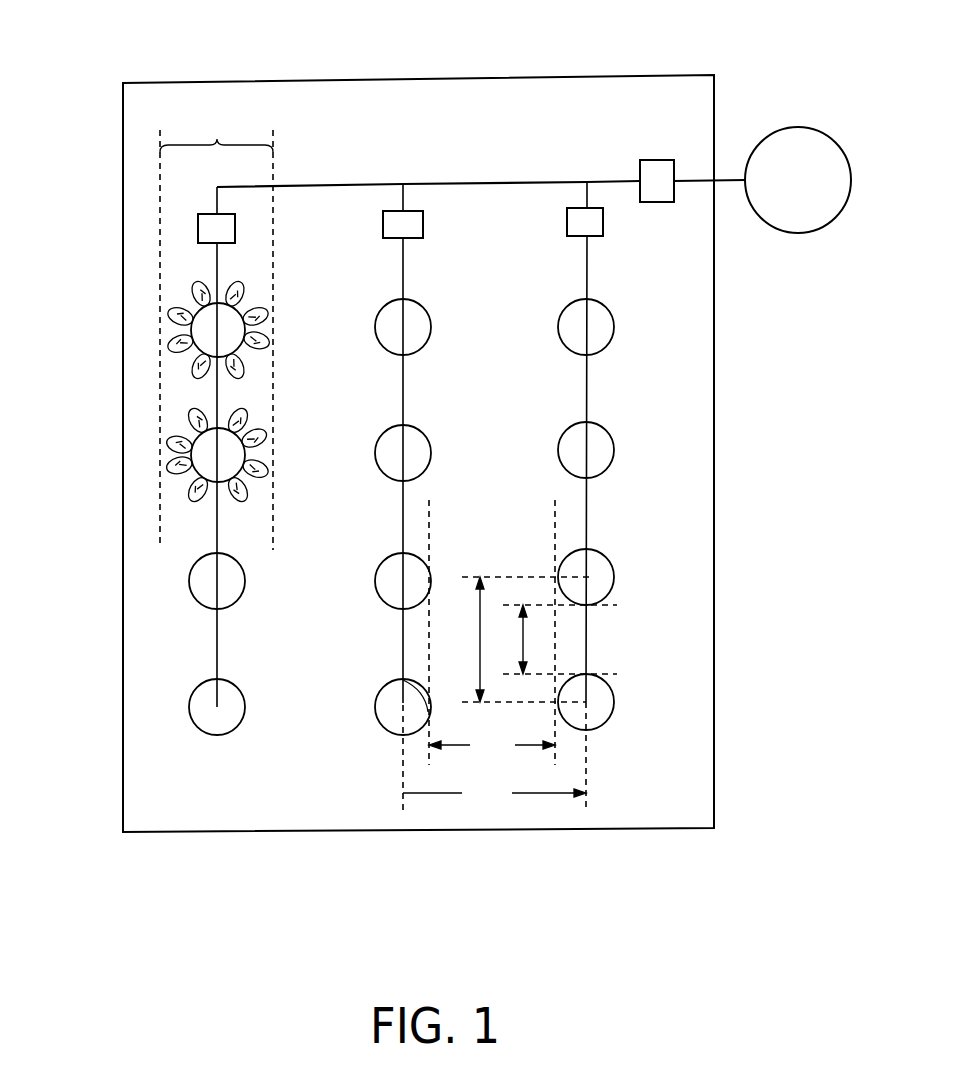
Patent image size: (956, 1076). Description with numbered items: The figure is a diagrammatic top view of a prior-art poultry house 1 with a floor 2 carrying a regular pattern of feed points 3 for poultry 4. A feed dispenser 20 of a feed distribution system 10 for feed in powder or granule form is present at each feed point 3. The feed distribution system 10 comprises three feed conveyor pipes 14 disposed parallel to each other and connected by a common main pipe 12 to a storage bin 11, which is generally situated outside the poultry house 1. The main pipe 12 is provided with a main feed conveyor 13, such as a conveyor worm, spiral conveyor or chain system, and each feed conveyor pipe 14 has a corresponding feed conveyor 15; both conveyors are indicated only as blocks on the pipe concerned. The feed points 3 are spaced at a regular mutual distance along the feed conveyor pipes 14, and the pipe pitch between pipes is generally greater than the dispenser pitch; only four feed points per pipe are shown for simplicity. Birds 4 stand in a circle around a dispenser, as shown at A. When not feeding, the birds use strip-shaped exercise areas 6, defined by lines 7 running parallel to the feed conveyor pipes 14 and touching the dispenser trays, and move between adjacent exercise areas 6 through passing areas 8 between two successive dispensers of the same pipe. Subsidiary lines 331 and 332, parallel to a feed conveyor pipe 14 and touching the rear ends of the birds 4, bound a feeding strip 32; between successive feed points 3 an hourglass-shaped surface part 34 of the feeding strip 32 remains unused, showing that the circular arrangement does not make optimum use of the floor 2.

The poultry house 1 is at (318, 80).
The floor 2 is at (370, 110).
The feed point 3 is at (586, 450).
The poultry 4 is at (186, 375).
The exercise area 6 is at (520, 525).
The line 7 is at (555, 543).
The passing area 8 is at (604, 627).
The feed distribution system 10 is at (540, 46).
The storage bin 11 is at (795, 127).
The main pipe 12 is at (468, 183).
The main feed conveyor 13 is at (655, 160).
The feed conveyor pipe 14 is at (586, 648).
The feed conveyor 15 is at (603, 225).
The feed dispenser 20 is at (612, 455).
The feeding strip 32 is at (216, 332).
The subsidiary line 331 is at (158, 533).
The subsidiary line 332 is at (273, 518).
The hourglass-shaped surface part 34 is at (258, 383).
The circle of birds A is at (140, 314).